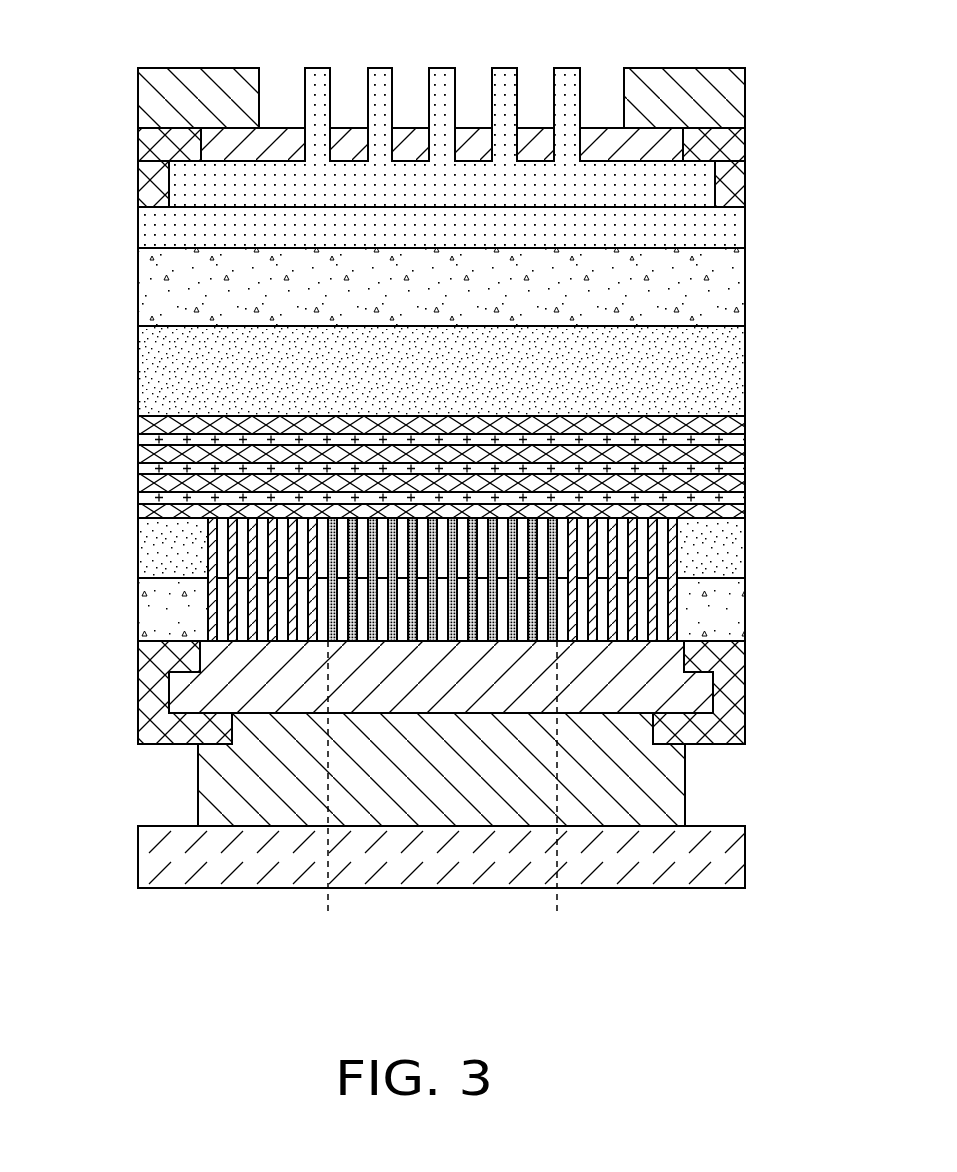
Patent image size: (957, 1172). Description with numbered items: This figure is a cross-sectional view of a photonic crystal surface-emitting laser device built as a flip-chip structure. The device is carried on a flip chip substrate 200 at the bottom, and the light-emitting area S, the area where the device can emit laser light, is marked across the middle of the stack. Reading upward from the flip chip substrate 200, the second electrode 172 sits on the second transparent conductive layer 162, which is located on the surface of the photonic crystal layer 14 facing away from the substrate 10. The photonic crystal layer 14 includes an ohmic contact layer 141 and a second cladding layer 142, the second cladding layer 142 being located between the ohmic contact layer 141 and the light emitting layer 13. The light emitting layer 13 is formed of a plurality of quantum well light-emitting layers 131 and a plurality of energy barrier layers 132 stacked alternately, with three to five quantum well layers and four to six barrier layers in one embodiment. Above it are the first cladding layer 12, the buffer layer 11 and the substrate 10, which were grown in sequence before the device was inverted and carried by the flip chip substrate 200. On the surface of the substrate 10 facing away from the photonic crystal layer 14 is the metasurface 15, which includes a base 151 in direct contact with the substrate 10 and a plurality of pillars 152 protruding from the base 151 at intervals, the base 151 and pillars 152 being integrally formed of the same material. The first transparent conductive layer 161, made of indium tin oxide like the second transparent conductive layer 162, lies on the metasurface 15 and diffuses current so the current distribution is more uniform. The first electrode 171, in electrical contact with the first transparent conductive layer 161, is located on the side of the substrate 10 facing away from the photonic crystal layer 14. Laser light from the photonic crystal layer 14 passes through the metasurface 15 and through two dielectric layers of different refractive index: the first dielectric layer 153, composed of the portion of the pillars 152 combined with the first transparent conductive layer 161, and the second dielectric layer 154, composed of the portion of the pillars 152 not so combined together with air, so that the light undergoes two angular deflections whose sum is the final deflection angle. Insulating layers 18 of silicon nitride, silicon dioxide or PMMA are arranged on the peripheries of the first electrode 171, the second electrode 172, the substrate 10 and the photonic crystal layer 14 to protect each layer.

The substrate 10 is at (725, 227).
The buffer layer 11 is at (725, 283).
The first cladding layer 12 is at (733, 365).
The light emitting layer 13 is at (509, 466).
The quantum well light-emitting layer 131 is at (737, 425).
The energy barrier layer 132 is at (737, 440).
The photonic crystal layer 14 is at (503, 579).
The ohmic contact layer 141 is at (727, 568).
The second cladding layer 142 is at (727, 605).
The metasurface 15 is at (505, 137).
The base 151 is at (702, 190).
The pillars 152 is at (562, 117).
The first dielectric layer 153 is at (138, 161).
The second dielectric layer 154 is at (138, 128).
The first transparent conductive layer 161 is at (640, 133).
The second transparent conductive layer 162 is at (700, 690).
The first electrode 171 is at (725, 80).
The second electrode 172 is at (665, 780).
The insulating layers 18 is at (738, 134).
The flip chip substrate 200 is at (727, 857).
The light-emitting area S is at (557, 912).